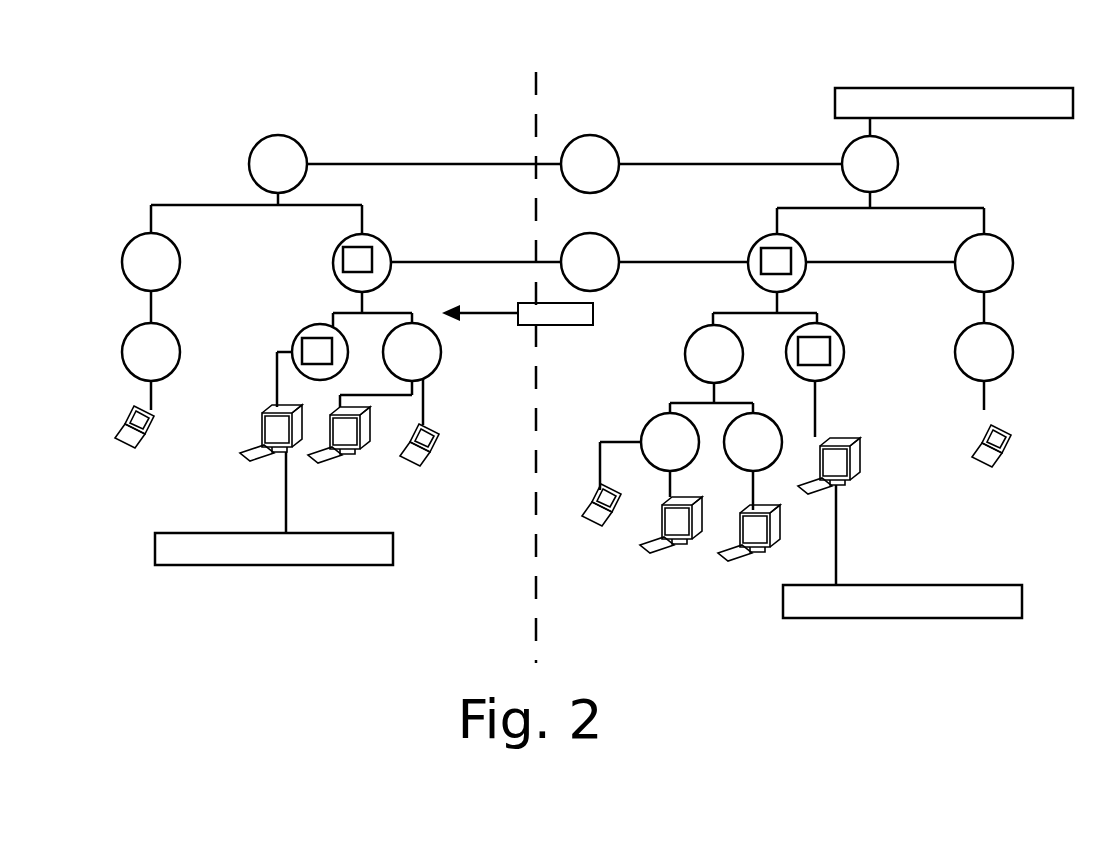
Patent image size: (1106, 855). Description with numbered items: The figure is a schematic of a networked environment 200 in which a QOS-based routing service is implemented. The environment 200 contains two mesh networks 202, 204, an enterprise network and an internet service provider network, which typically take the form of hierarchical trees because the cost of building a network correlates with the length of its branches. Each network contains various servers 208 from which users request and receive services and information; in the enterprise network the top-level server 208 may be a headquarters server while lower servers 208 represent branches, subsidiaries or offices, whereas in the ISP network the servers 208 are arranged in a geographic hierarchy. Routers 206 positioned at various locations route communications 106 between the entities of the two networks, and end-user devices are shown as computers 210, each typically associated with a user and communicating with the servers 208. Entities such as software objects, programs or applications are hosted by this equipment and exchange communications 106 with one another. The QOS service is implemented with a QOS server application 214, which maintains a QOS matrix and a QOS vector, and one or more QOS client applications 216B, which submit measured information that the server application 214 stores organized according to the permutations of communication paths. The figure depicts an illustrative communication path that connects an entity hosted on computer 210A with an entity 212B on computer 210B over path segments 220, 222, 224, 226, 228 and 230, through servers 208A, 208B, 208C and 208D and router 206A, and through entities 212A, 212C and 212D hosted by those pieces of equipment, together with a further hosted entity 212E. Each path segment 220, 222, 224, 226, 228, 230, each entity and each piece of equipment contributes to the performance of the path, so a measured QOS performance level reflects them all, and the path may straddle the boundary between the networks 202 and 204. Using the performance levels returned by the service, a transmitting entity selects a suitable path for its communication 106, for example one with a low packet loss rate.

The communication 106 is at (588, 325).
The networked environment 200 is at (573, 77).
The mesh network 202 is at (167, 95).
The mesh network 204 is at (955, 68).
The router 206 is at (602, 137).
The router 206A is at (577, 245).
The server 208 is at (253, 156).
The server 208A is at (278, 334).
The server 208B is at (307, 255).
The server 208C is at (842, 255).
The server 208D is at (865, 342).
The computer 210 is at (128, 420).
The computer 210A is at (235, 458).
The computer 210B is at (850, 450).
The entity 212A is at (317, 338).
The entity 212B is at (353, 247).
The entity 212C is at (775, 243).
The entity 212D is at (808, 338).
The QoS agent 212E is at (577, 247).
The QOS server application 214 is at (954, 111).
The QoS client application 216B is at (588, 535).
The path segment 220 is at (277, 381).
The path segment 222 is at (367, 305).
The path segment 224 is at (403, 260).
The path segment 226 is at (678, 262).
The path segment 228 is at (807, 335).
The path segment 230 is at (818, 418).